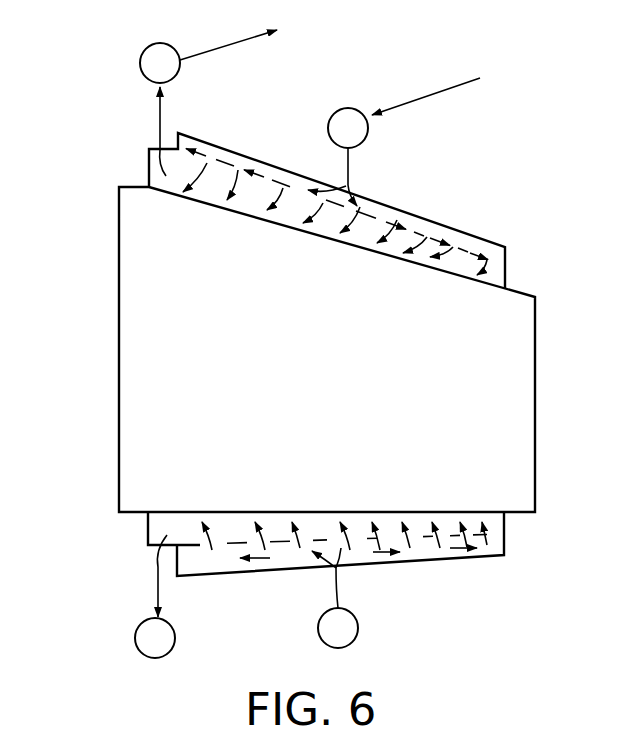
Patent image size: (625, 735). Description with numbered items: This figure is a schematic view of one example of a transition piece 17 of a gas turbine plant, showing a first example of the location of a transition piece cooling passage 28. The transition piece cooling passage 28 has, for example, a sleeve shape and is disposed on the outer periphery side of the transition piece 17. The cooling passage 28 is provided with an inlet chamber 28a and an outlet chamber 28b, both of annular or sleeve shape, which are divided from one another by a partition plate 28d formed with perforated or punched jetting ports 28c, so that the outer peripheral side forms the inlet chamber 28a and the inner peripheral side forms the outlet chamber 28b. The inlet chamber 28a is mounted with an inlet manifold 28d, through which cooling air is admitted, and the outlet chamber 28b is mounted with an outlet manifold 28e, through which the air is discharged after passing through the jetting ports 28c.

The transition piece 17 is at (118, 389).
The transition piece cooling passage 28 is at (445, 212).
The inlet chamber 28a is at (371, 219).
The outlet chamber 28b is at (215, 178).
The jetting ports 28c is at (246, 206).
The partition plate / inlet manifold 28d is at (356, 105).
The outlet manifold 28e is at (168, 46).